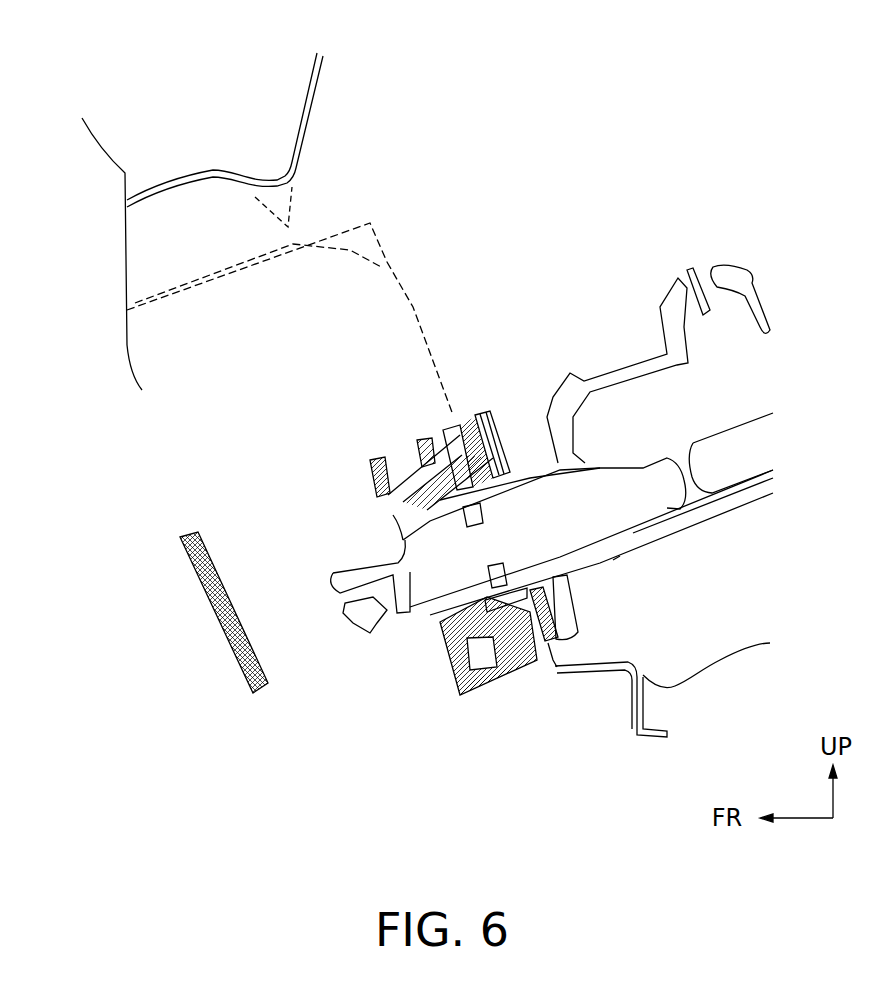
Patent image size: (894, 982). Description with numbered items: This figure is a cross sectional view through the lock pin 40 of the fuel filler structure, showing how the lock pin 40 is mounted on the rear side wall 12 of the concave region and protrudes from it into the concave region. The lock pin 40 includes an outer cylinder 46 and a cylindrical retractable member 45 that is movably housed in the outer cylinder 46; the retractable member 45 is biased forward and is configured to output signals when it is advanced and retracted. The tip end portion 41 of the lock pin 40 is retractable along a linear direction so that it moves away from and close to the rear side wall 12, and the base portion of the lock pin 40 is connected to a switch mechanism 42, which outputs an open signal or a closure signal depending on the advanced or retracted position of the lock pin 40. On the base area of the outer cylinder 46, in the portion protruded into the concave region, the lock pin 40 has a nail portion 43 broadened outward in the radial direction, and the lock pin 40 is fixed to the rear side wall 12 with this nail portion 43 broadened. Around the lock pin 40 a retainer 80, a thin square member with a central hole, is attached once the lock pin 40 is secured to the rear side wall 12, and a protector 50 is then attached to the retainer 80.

The rear side wall 12 is at (407, 288).
The lock pin 40 is at (380, 647).
The tip end portion 41 is at (348, 603).
The switch mechanism 42 is at (608, 382).
The nail portion 43 is at (443, 433).
The retractable member 45 is at (643, 497).
The outer cylinder 46 is at (393, 515).
The protector 50 is at (213, 602).
The retainer 80 is at (452, 640).